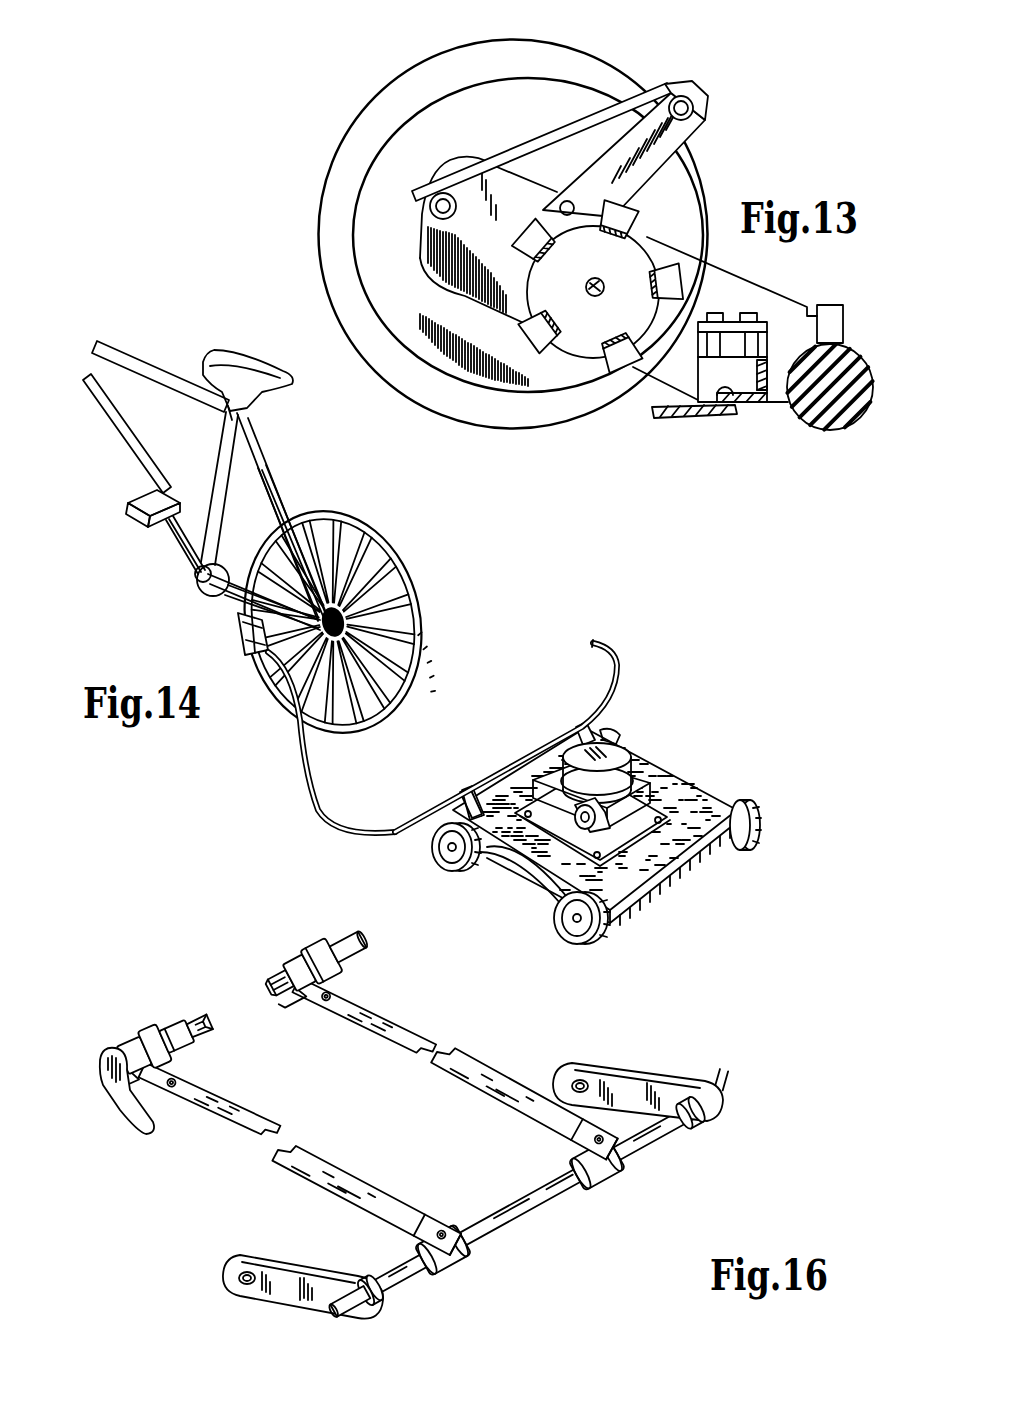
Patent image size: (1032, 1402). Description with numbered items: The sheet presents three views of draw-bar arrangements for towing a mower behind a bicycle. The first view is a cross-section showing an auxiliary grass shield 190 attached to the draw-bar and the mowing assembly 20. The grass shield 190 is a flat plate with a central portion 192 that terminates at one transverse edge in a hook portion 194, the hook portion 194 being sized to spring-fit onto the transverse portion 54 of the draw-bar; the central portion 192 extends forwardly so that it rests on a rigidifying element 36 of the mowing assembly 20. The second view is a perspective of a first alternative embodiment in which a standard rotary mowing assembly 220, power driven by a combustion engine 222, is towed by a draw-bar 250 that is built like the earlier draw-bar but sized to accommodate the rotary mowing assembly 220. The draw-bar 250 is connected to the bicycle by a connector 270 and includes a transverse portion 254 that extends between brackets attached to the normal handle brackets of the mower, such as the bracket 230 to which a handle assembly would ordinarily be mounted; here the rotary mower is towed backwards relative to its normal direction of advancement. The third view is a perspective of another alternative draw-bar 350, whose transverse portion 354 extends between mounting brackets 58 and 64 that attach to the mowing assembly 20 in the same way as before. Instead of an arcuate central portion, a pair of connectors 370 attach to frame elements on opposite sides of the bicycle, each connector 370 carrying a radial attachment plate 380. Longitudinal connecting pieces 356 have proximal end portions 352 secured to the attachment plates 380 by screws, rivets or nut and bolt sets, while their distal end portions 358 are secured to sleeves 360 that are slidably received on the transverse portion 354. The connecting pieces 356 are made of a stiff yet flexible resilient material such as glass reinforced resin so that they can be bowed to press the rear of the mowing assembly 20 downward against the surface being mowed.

In FIG. 13, the mowing assembly 20 is at (300, 272).
In FIG. 13, the rigidifying element 36 is at (428, 212).
In FIG. 13, the transverse portion 54 is at (702, 118).
In FIG. 13, the auxiliary grass shield 190 is at (649, 62).
In FIG. 13, the central portion 192 is at (547, 144).
In FIG. 13, the hook portion 194 is at (695, 94).
In FIG. 14, the rotary mowing assembly 220 is at (558, 750).
In FIG. 14, the engine 222 is at (627, 750).
In FIG. 14, the bracket 230 is at (458, 795).
In FIG. 14, the draw-bar 250 is at (303, 775).
In FIG. 14, the transverse portion 254 is at (533, 750).
In FIG. 14, the connector 270 is at (234, 620).
In FIG. 16, the draw-bar 350 is at (461, 1166).
In FIG. 16, the proximal end portion 352 is at (361, 995).
In FIG. 16, the transverse portion 354 is at (537, 1213).
In FIG. 16, the longitudinal connecting piece 356 is at (317, 1157).
In FIG. 16, the distal end portion 358 is at (557, 1128).
In FIG. 16, the sleeve 360 is at (617, 1167).
In FIG. 16, the connector 370 is at (284, 931).
In FIG. 16, the radial attachment plate 380 is at (322, 1006).
In FIG. 16, the mounting bracket 58 is at (647, 1080).
In FIG. 16, the mounting bracket 64 is at (260, 1305).